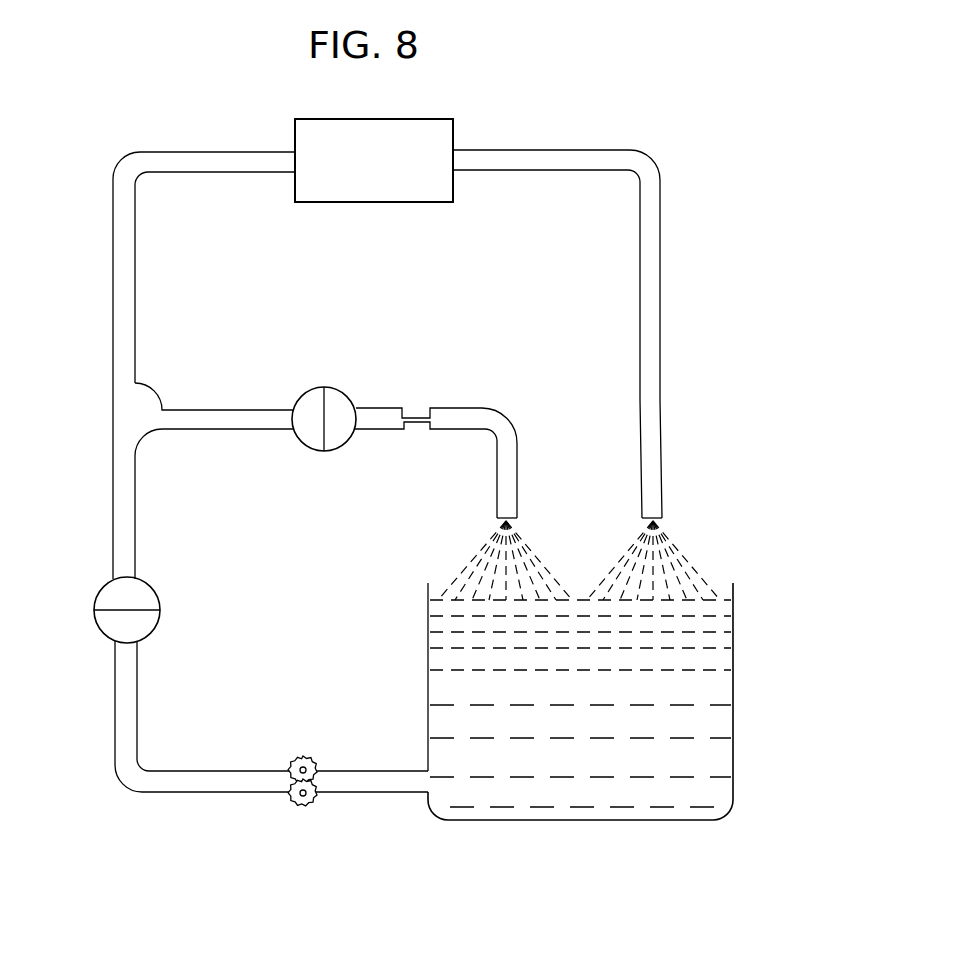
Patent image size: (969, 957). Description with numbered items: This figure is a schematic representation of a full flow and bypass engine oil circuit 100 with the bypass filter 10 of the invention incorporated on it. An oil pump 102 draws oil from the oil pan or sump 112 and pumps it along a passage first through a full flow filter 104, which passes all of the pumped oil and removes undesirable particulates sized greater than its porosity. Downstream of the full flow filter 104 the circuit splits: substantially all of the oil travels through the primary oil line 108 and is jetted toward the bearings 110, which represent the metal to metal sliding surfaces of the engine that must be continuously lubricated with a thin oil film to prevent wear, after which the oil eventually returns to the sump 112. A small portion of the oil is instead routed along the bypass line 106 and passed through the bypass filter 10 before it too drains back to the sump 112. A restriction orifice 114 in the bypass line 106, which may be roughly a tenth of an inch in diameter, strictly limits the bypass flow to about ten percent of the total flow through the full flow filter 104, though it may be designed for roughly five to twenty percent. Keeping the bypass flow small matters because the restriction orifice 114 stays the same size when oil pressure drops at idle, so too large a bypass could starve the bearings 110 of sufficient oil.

The engine oil circuit 100 is at (163, 863).
The oil pump 102 is at (304, 756).
The full flow filter 104 is at (95, 600).
The bypass line 106 is at (223, 417).
The primary oil line 108 is at (118, 318).
The bypass filter 10 is at (340, 401).
The bearings 110 is at (308, 122).
The oil pan or sump 112 is at (733, 683).
The restriction orifice 114 is at (414, 410).